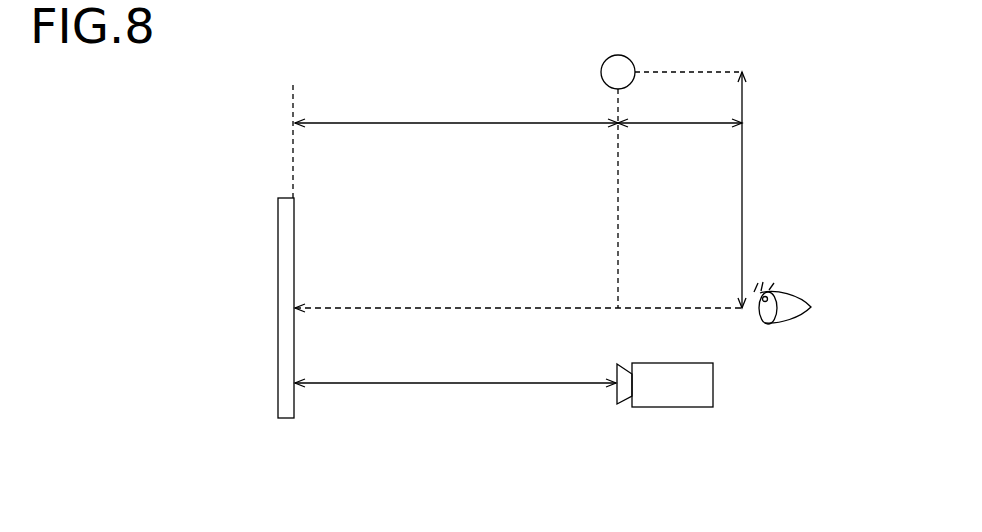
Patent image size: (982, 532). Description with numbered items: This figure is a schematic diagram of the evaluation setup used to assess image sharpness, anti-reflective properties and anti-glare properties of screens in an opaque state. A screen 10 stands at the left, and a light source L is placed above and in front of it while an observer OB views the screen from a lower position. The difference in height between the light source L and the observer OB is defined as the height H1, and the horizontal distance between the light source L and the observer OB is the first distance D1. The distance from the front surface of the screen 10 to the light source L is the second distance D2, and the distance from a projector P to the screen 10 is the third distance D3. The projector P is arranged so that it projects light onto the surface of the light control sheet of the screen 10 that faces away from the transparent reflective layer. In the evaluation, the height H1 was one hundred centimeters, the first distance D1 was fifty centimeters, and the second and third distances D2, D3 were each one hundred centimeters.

The screen 10 is at (290, 418).
The light source L is at (601, 67).
The observer OB is at (800, 298).
The projector P is at (671, 407).
The first distance D1 is at (680, 109).
The second distance D2 is at (456, 109).
The third distance D3 is at (455, 369).
The height H1 is at (761, 190).